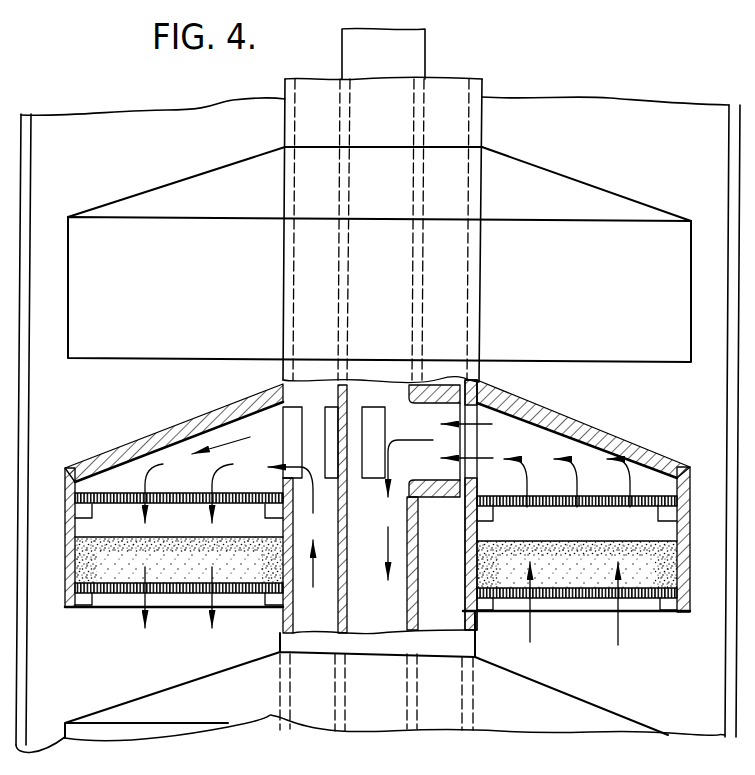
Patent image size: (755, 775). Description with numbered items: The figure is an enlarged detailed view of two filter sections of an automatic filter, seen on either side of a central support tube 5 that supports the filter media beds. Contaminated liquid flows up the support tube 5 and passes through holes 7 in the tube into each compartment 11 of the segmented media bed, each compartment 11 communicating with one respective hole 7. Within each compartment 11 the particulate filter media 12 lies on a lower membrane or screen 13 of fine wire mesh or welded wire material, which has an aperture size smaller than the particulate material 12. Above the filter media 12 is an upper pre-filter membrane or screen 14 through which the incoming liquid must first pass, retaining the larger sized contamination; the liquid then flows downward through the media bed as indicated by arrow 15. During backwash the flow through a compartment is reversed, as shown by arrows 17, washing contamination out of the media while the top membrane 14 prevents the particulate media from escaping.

The support tube 5 is at (482, 122).
The holes 7 is at (470, 442).
The compartment 11 is at (691, 467).
The particulate filter media 12 is at (650, 570).
The screen 13 is at (632, 599).
The upper pre-filter membrane 14 is at (130, 493).
The arrow 15 is at (140, 615).
The arrows 17 is at (531, 631).